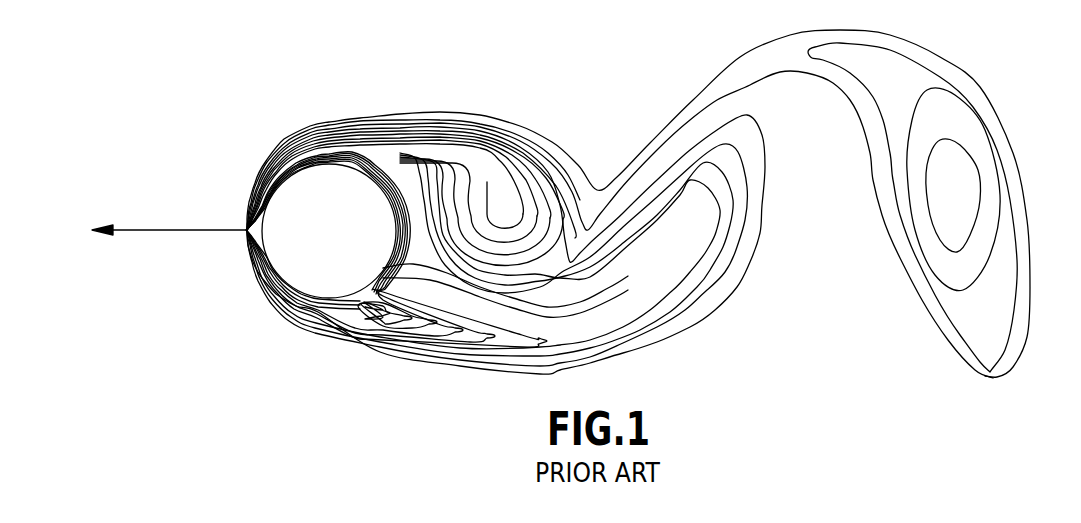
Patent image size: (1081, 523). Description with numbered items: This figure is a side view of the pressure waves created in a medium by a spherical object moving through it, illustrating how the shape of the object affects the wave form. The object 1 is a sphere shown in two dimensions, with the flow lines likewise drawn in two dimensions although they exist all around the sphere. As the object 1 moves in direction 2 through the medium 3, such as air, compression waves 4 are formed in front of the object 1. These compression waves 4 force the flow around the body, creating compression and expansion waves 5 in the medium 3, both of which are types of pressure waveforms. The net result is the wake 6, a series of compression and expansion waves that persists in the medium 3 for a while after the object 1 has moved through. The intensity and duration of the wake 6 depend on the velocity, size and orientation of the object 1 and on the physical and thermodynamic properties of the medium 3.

The object 1 is at (318, 282).
The direction 2 is at (173, 226).
The medium 3 is at (837, 275).
The compression waves 4 is at (263, 182).
The compression and expansion waves 5 is at (371, 143).
The wake 6 is at (508, 198).